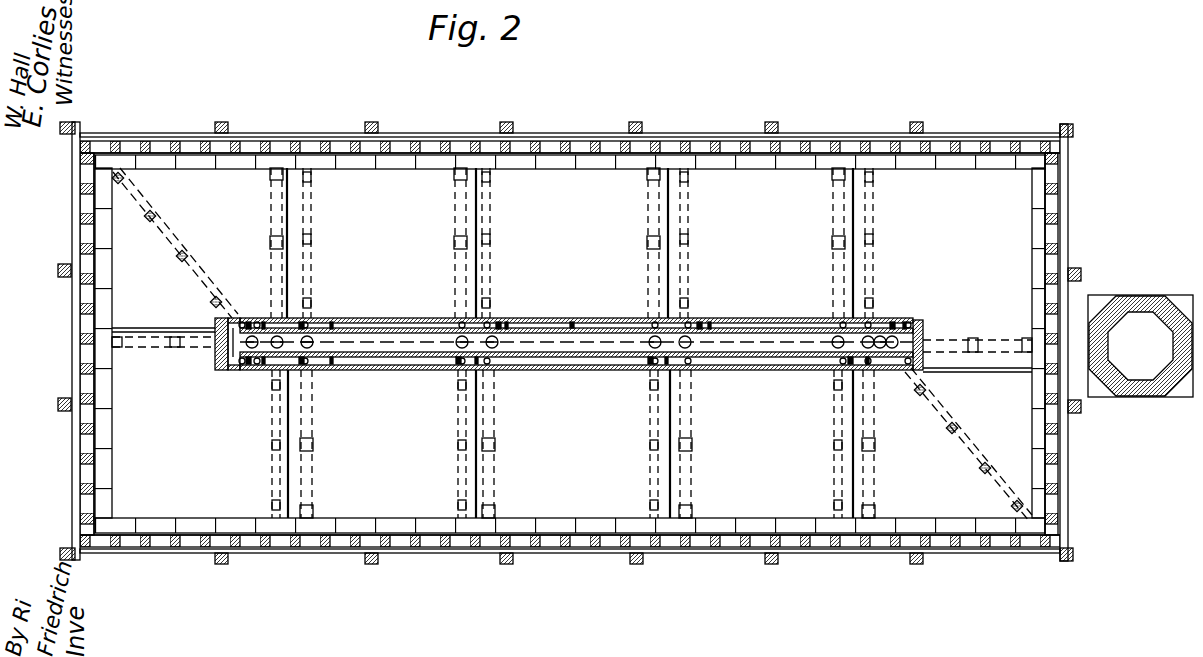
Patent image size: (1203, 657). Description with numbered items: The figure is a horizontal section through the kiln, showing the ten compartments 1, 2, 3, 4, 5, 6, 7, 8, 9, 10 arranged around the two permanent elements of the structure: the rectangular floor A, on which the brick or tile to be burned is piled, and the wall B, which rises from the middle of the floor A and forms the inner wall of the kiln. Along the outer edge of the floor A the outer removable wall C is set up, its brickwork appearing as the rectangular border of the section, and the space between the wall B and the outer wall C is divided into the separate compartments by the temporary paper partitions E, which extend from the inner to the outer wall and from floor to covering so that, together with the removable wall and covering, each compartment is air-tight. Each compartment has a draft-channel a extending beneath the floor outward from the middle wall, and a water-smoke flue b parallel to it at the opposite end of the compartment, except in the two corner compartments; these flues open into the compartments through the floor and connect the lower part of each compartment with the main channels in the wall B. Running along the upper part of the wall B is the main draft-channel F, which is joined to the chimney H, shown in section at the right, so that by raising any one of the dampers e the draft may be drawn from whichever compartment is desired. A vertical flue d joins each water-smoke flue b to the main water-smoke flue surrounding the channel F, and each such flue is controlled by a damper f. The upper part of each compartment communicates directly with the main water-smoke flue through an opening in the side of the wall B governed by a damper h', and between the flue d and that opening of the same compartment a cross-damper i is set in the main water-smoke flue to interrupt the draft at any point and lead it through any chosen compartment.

The floor A is at (757, 505).
The wall B is at (792, 372).
The outer removable wall C is at (578, 156).
The paper partitions E is at (150, 324).
The main draft-channel F is at (585, 345).
The chimney H is at (1140, 334).
The draft-channel a is at (270, 244).
The water-smoke flue b is at (308, 238).
The vertical flue d is at (172, 350).
The damper e is at (300, 320).
The damper f is at (245, 320).
The damper h' is at (578, 350).
The cross-damper i is at (262, 320).
The compartment 1 is at (373, 240).
The compartment 2 is at (563, 240).
The compartment 3 is at (759, 242).
The compartment 4 is at (944, 244).
The compartment 5 is at (968, 445).
The compartment 6 is at (42, 381).
The compartment 7 is at (40, 340).
The compartment 8 is at (383, 454).
The compartment 9 is at (833, 272).
The compartment 10 is at (175, 243).